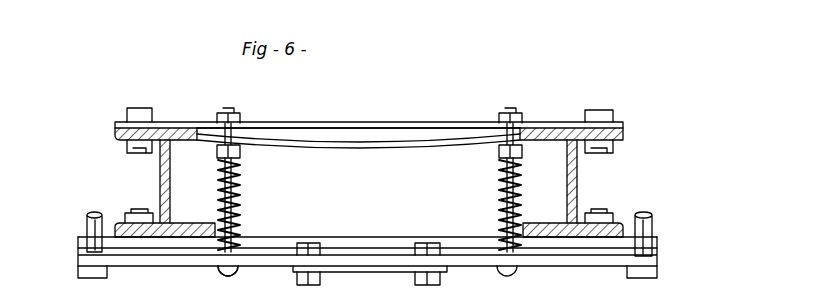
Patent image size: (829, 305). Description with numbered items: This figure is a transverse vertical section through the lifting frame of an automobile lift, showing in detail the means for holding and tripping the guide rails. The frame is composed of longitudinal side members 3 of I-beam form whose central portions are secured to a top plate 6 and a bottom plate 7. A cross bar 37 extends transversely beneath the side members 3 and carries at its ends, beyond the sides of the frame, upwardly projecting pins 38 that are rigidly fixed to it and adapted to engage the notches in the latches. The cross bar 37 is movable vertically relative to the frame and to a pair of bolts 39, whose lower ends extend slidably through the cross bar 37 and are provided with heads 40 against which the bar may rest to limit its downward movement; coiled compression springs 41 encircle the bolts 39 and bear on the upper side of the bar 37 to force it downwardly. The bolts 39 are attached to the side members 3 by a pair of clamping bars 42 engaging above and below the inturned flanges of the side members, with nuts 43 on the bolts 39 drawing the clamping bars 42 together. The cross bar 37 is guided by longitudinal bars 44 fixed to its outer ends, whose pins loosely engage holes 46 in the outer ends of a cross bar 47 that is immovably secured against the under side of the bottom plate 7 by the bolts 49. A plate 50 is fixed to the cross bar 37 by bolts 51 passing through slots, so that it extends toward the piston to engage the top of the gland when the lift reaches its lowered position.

The longitudinal side members 3 is at (577, 186).
The top plate 6 is at (293, 123).
The bottom plate 7 is at (308, 243).
The cross bar 37 is at (533, 264).
The pins 38 is at (85, 226).
The bolts 39 is at (240, 220).
The heads 40 is at (224, 276).
The coiled compression springs 41 is at (241, 182).
The clamping bars 42 is at (436, 134).
The nuts 43 is at (242, 150).
The longitudinal bars 44 is at (92, 276).
The holes 46 is at (228, 271).
The cross bar 47 is at (376, 246).
The bolts 49 is at (140, 209).
The plate 50 is at (353, 272).
The bolts 51 is at (308, 285).